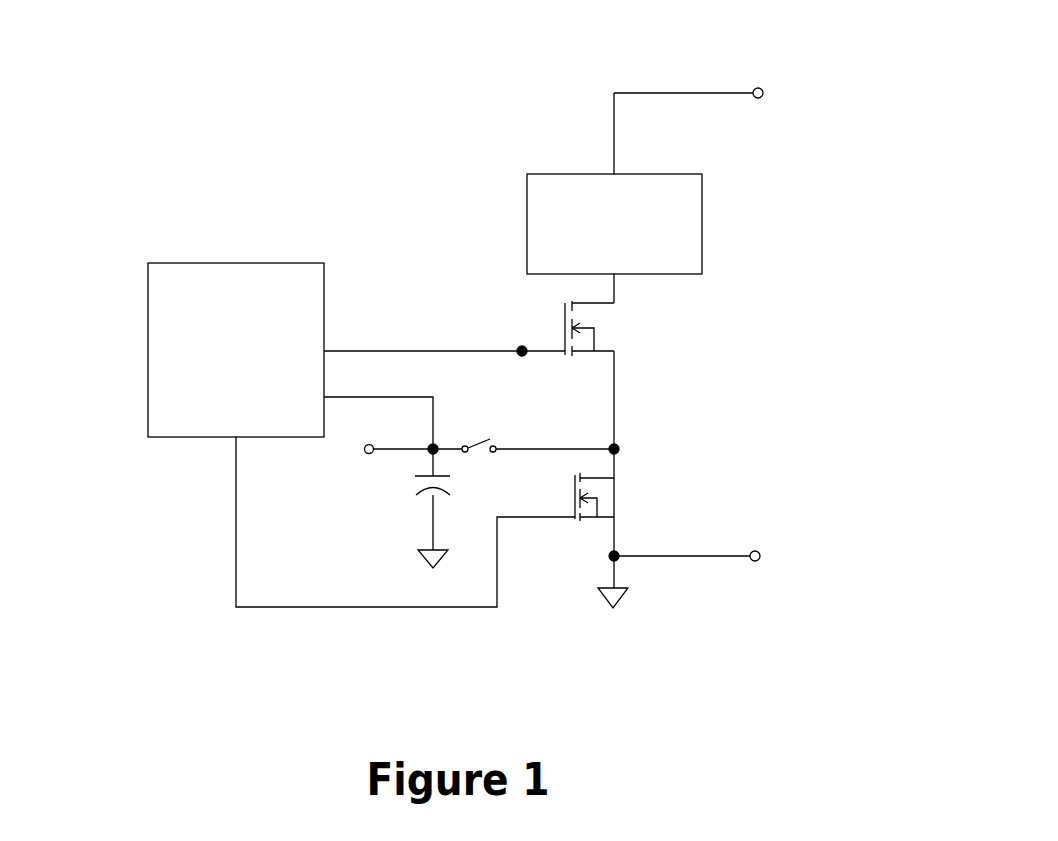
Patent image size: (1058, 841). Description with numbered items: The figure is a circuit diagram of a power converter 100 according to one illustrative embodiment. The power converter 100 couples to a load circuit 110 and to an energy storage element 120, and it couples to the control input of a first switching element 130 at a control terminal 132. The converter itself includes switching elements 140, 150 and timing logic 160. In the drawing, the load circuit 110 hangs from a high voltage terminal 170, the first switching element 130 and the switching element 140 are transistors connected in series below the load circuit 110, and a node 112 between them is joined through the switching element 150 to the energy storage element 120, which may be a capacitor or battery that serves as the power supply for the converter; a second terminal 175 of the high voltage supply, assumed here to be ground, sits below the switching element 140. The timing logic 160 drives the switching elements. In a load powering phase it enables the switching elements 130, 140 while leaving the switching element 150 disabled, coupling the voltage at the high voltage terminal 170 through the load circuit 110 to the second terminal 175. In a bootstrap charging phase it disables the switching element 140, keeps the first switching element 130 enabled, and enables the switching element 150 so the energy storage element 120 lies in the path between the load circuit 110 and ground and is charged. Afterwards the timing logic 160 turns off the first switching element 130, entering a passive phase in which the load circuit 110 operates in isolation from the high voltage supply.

The power converter 100 is at (93, 128).
The load circuit 110 is at (595, 251).
The node between transistors 112 is at (619, 446).
The energy storage element 120 is at (415, 487).
The first switching element 130 is at (570, 355).
The control terminal 132 is at (516, 347).
The switching element 140 is at (575, 520).
The switching element 150 is at (490, 440).
The timing logic 160 is at (216, 377).
The high voltage terminal 170 is at (760, 88).
The second terminal 175 is at (757, 550).